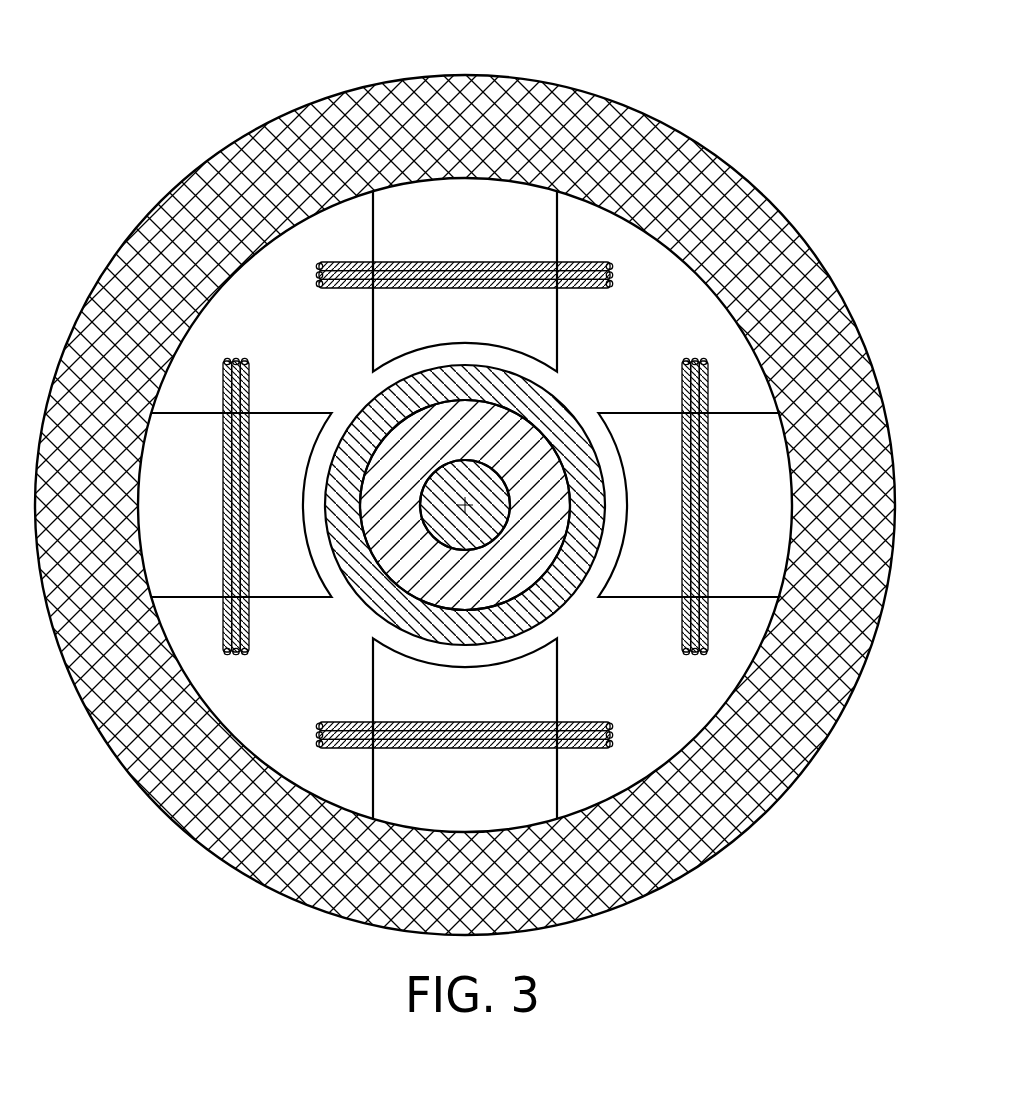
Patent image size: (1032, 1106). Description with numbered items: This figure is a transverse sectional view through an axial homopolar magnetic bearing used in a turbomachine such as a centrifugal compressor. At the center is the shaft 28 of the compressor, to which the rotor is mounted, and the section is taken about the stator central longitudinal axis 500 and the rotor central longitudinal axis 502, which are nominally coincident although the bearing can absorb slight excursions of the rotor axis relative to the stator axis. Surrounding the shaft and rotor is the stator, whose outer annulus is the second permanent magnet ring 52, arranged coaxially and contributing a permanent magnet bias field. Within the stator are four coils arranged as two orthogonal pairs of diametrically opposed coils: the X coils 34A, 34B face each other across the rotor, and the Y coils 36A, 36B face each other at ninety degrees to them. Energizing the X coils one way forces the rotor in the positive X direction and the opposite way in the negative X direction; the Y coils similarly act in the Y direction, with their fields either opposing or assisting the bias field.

The second permanent magnet ring 52 is at (597, 128).
The shaft 28 is at (452, 513).
The stator central longitudinal axis 500 is at (536, 567).
The rotor central longitudinal axis 502 is at (468, 508).
The Y coil 36B is at (637, 273).
The Y coil 36A is at (638, 733).
The X coil 34B is at (210, 383).
The X coil 34A is at (728, 368).